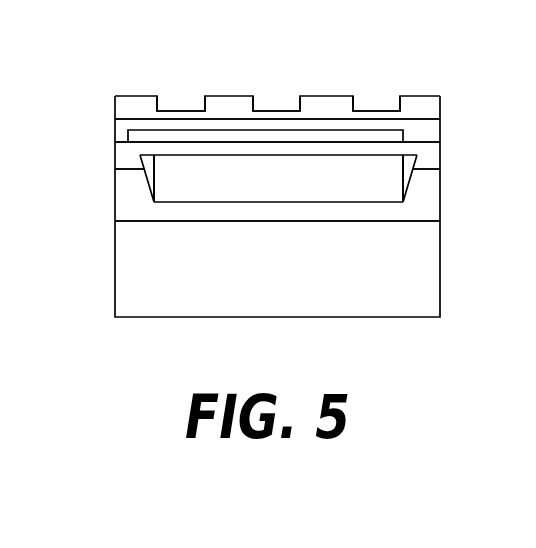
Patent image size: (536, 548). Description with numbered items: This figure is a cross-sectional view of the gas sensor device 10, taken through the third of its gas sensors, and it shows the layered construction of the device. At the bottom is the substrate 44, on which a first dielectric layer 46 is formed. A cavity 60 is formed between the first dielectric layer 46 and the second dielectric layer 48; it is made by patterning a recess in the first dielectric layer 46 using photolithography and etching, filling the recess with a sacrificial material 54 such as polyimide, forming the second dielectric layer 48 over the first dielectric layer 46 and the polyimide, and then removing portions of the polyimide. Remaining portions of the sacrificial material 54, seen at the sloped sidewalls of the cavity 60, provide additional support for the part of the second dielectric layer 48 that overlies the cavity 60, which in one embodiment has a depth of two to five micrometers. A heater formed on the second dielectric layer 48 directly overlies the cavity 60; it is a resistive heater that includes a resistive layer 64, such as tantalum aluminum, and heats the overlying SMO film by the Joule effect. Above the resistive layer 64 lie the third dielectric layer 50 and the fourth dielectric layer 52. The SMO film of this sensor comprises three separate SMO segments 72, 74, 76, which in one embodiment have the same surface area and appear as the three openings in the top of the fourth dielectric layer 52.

The gas sensor device 10 is at (386, 45).
The substrate 44 is at (115, 272).
The first dielectric layer 46 is at (115, 193).
The second dielectric layer 48 is at (115, 157).
The third dielectric layer 50 is at (115, 132).
The fourth dielectric layer 52 is at (115, 106).
The sacrificial material 54 is at (409, 161).
The cavity 60 is at (288, 188).
The resistive layer 64 is at (403, 136).
The SMO segment 72 is at (378, 110).
The SMO segment 74 is at (281, 110).
The SMO segment 76 is at (182, 110).